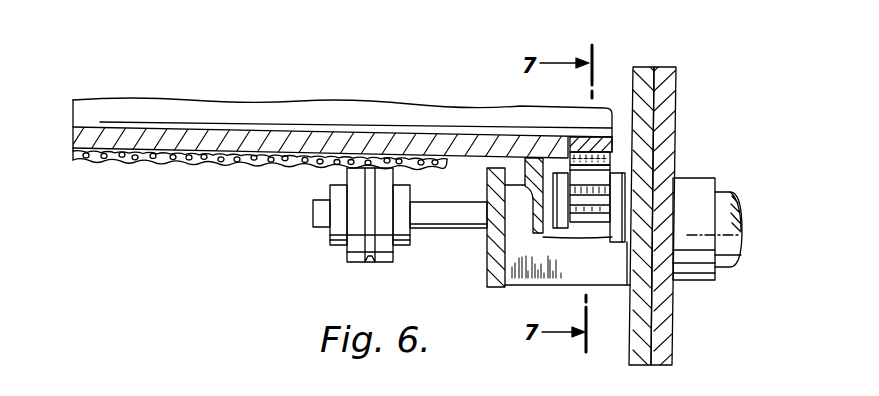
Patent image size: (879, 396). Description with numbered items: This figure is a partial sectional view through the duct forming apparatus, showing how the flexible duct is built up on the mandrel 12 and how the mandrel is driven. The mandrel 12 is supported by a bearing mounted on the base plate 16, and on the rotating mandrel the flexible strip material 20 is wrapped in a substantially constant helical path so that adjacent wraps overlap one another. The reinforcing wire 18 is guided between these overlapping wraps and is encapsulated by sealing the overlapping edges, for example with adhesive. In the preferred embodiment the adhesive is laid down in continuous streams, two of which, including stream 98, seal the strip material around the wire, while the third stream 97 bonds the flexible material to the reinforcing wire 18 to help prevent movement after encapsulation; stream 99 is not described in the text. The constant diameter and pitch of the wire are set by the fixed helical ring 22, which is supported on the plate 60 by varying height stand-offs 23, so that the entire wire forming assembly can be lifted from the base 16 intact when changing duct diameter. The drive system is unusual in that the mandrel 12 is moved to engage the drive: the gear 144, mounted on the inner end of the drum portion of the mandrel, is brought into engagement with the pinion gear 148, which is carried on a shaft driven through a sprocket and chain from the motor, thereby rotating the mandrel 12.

The mandrel 12 is at (232, 136).
The base plate 16 is at (676, 70).
The reinforcing wire 18 is at (177, 163).
The flexible strip material 20 is at (232, 165).
The helical ring 22 is at (486, 266).
The stand-offs 23 is at (513, 286).
The plate 60 is at (645, 68).
The adhesive stream 97 is at (303, 165).
The adhesive stream 98 is at (317, 165).
The fiber layer 99 is at (290, 165).
The gear 144 is at (610, 158).
The pinion gear 148 is at (587, 222).